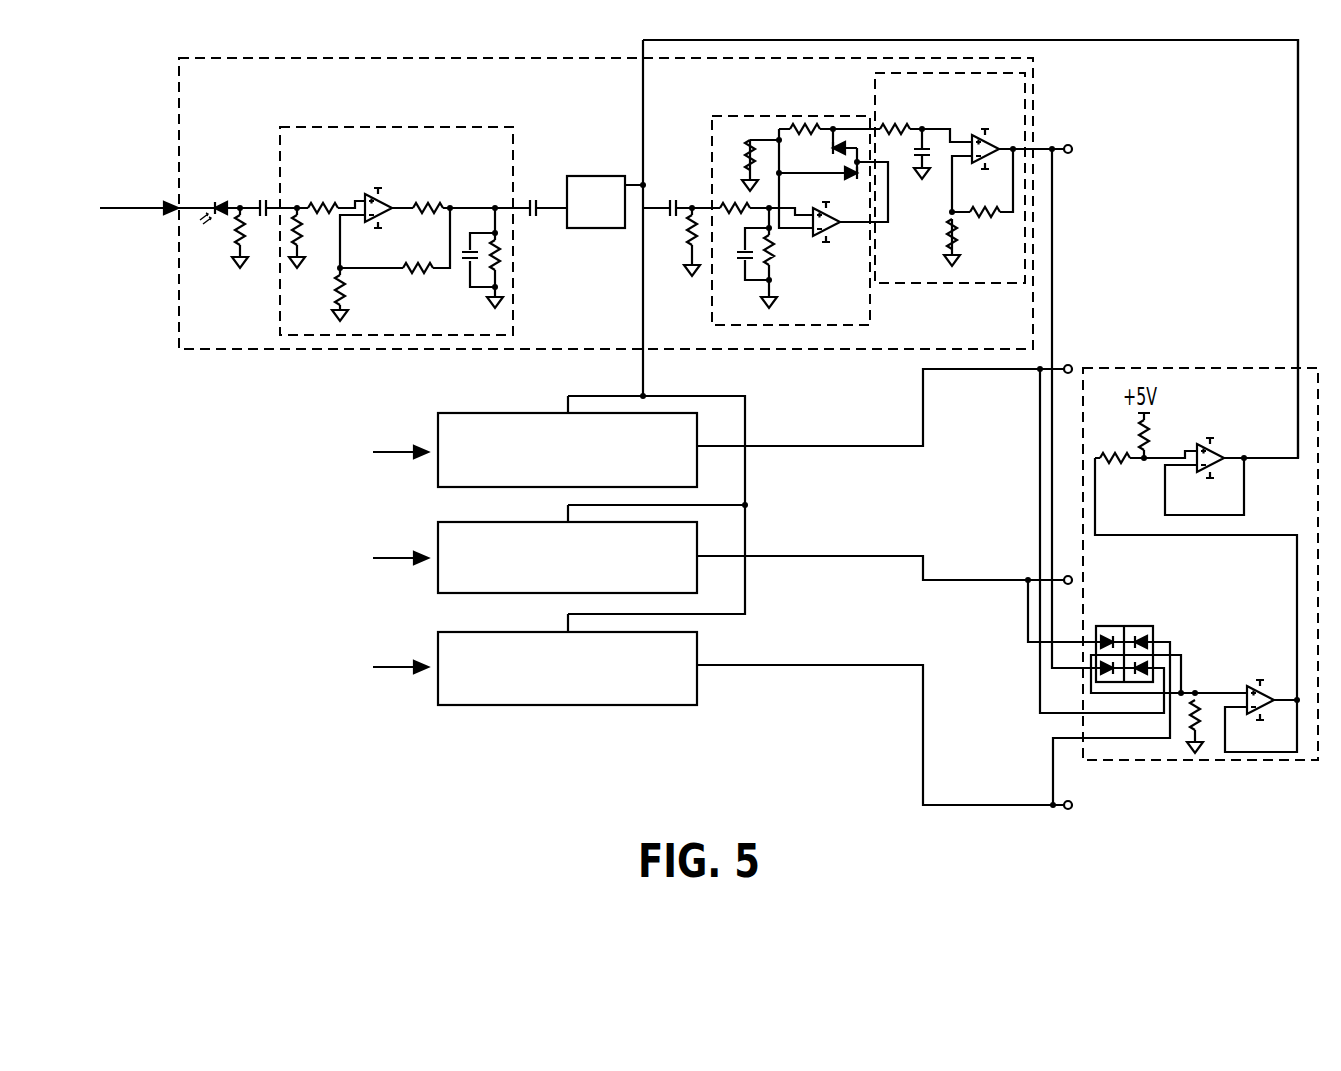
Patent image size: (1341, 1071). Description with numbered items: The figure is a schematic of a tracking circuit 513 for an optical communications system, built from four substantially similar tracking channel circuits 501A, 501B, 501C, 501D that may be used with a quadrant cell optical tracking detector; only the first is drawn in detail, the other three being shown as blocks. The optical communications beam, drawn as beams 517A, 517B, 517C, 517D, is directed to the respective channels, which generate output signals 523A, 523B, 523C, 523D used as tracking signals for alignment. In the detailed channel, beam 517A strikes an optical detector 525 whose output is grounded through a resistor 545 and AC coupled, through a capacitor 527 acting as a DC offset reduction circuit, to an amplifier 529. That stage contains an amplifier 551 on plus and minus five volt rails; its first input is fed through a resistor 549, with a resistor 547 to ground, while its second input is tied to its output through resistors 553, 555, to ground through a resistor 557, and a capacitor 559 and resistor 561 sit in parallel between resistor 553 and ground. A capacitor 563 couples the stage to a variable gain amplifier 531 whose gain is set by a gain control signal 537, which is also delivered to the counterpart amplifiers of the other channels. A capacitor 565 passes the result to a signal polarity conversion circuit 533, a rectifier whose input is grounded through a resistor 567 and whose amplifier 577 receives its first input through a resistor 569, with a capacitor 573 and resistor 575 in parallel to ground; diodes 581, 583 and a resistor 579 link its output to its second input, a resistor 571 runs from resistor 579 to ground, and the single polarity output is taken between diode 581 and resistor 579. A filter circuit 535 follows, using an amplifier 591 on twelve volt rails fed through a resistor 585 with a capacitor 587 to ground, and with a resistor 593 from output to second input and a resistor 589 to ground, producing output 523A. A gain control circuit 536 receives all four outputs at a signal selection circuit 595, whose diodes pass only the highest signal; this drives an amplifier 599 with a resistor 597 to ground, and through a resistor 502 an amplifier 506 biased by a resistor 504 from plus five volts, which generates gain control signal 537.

The tracking channel circuit 501A is at (265, 352).
The tracking channel circuit 501B is at (502, 413).
The tracking channel circuit 501C is at (502, 522).
The tracking channel circuit 501D is at (502, 632).
The resistor 502 is at (1122, 455).
The resistor 504 is at (1150, 440).
The amplifier 506 is at (1226, 454).
The tracking circuit 513 is at (248, 740).
The optical communications beam 517A is at (162, 206).
The optical communications beam 517B is at (392, 447).
The optical communications beam 517C is at (392, 558).
The optical communications beam 517D is at (392, 667).
The output signal 523A is at (1072, 149).
The output signal 523B is at (1072, 365).
The output signal 523C is at (1072, 580).
The output signal 523D is at (1072, 805).
The optical detector 525 is at (226, 203).
The capacitor 527 is at (262, 200).
The amplifier 529 is at (352, 128).
The variable gain amplifier 531 is at (600, 176).
The signal polarity conversion circuit 533 is at (712, 118).
The filter circuit 535 is at (980, 284).
The gain control circuit 536 is at (1190, 368).
The gain control signal 537 is at (1135, 40).
The resistor 545 is at (235, 256).
The resistor 547 is at (300, 256).
The resistor 549 is at (324, 204).
The amplifier 551 is at (388, 190).
The resistor 553 is at (442, 212).
The resistor 555 is at (420, 266).
The resistor 557 is at (348, 290).
The capacitor 559 is at (468, 286).
The resistor 561 is at (502, 266).
The capacitor 563 is at (538, 220).
The capacitor 565 is at (672, 226).
The resistor 567 is at (676, 260).
The resistor 569 is at (725, 205).
The resistor 571 is at (740, 165).
The capacitor 573 is at (745, 282).
The resistor 575 is at (778, 282).
The amplifier 577 is at (836, 232).
The resistor 579 is at (792, 125).
The diode 581 is at (847, 142).
The diode 583 is at (842, 172).
The resistor 585 is at (898, 125).
The capacitor 587 is at (920, 180).
The resistor 589 is at (948, 238).
The amplifier 591 is at (968, 143).
The resistor 593 is at (984, 218).
The signal selection circuit 595 is at (1138, 626).
The resistor 597 is at (1200, 752).
The amplifier 599 is at (1244, 692).